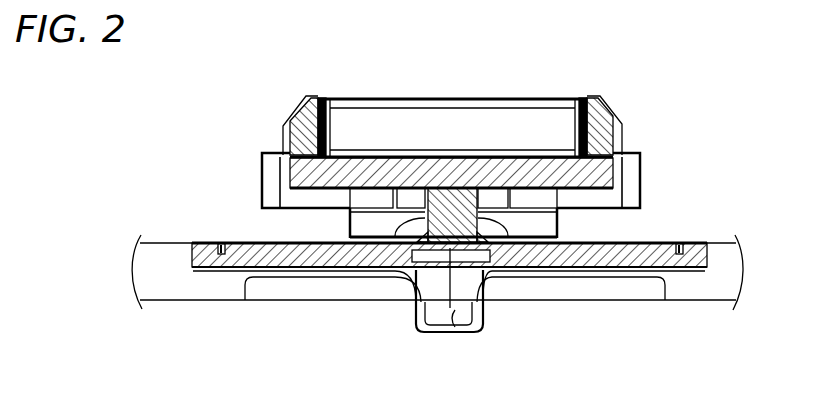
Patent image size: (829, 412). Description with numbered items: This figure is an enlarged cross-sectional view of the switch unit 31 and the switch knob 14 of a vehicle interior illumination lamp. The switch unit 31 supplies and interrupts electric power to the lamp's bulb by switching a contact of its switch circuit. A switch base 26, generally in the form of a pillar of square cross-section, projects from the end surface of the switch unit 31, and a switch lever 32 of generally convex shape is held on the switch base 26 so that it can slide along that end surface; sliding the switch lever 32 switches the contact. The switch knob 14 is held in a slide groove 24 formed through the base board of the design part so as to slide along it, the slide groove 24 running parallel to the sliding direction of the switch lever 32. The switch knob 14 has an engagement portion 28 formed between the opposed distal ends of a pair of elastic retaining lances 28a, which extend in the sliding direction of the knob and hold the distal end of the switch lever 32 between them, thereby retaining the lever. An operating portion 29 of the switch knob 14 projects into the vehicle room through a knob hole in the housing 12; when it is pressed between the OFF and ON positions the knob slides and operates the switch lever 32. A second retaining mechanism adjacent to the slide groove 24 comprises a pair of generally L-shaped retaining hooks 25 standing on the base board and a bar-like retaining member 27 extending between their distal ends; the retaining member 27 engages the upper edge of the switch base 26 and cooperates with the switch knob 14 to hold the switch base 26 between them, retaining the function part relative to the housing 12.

The housing 12 is at (665, 305).
The switch knob 14 is at (229, 267).
The slide groove 24 is at (167, 265).
The retaining hook 25 is at (304, 108).
The switch base 26 is at (449, 170).
The retaining member 27 is at (349, 99).
The engagement portion 28 is at (426, 316).
The elastic retaining lance 28a is at (472, 214).
The operating portion 29 is at (456, 333).
The switch unit 31 is at (641, 186).
The switch lever 32 is at (380, 272).